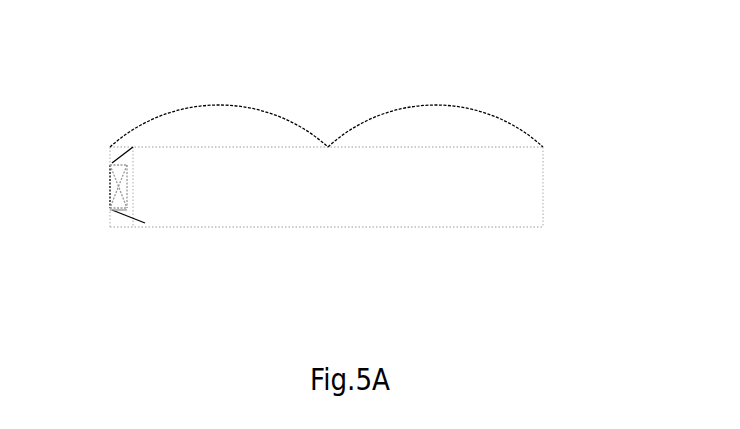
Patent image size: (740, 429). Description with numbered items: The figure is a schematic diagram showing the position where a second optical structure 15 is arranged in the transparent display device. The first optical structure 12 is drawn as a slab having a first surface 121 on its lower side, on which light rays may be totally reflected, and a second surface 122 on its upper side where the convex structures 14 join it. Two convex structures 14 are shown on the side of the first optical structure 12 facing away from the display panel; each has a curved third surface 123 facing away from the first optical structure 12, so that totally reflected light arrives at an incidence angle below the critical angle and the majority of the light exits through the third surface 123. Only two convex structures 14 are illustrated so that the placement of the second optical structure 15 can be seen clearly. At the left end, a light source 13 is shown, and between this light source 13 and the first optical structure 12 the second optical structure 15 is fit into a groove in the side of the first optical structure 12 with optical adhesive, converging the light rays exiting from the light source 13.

The first optical structure 12 is at (190, 207).
The first surface 121 is at (503, 227).
The second surface 122 is at (497, 147).
The third surface 123 is at (212, 107).
The light source 13 is at (110, 172).
The convex structure 14 is at (383, 142).
The second optical structure 15 is at (140, 222).